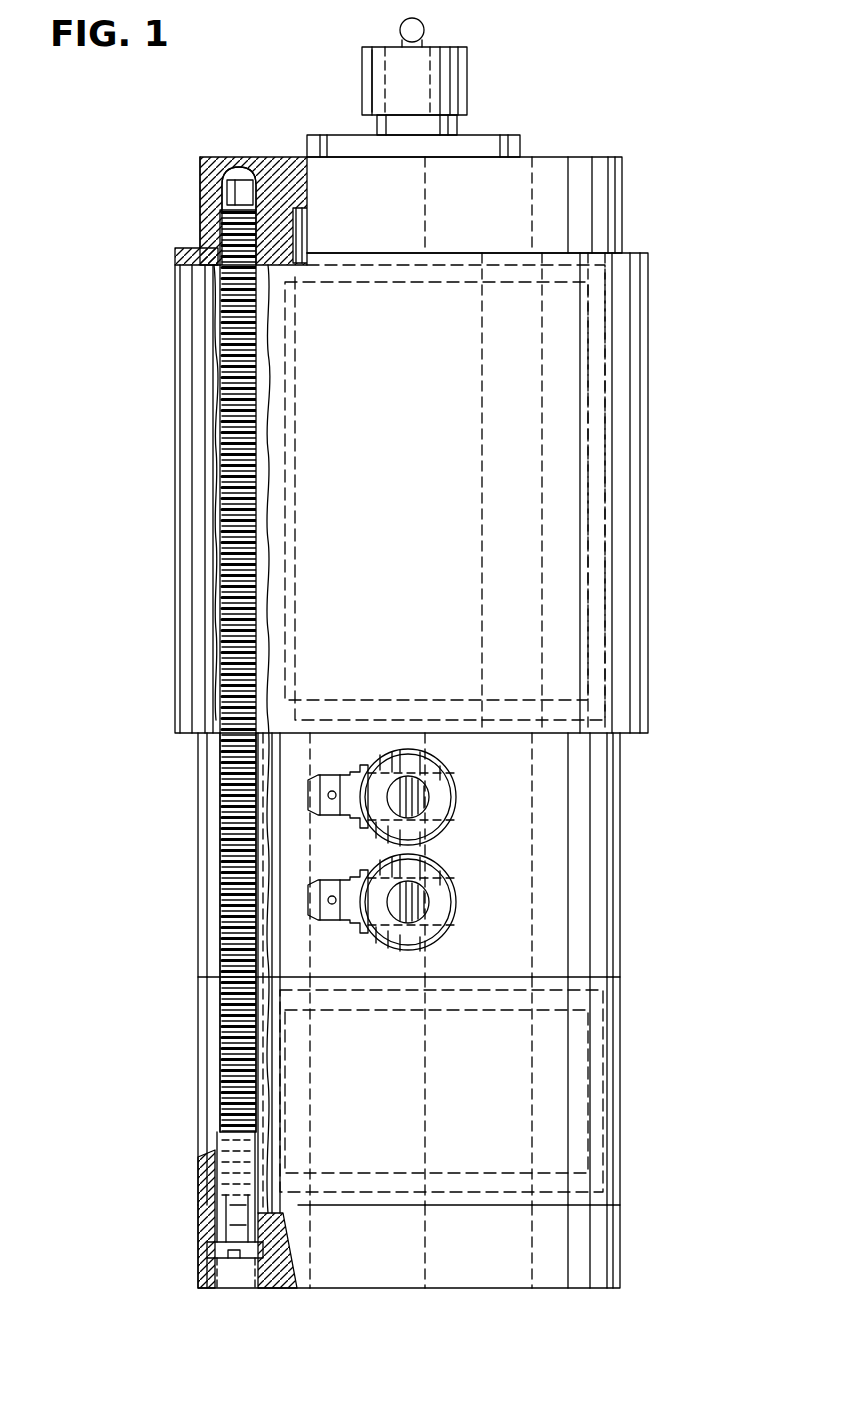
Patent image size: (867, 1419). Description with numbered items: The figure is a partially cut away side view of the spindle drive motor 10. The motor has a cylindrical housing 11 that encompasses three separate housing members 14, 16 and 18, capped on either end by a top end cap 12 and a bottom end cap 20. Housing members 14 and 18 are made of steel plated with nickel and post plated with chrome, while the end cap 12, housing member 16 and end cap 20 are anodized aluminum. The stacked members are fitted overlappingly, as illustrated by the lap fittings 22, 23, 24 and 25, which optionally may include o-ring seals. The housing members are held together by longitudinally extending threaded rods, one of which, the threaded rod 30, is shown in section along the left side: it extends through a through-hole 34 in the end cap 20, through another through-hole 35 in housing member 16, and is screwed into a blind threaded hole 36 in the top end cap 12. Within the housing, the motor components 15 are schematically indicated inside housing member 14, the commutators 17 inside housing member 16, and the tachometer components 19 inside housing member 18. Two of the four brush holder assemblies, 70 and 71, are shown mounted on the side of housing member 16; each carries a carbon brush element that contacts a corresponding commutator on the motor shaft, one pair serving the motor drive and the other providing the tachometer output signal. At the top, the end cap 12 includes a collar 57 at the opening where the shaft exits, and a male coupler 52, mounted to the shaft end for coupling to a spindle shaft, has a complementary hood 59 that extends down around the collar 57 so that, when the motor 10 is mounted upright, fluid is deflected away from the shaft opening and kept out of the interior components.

The spindle drive motor 10 is at (706, 328).
The cylindrical housing 11 is at (630, 181).
The top end cap 12 is at (604, 238).
The housing member 14 is at (632, 523).
The motor components 15 is at (571, 636).
The housing member 16 is at (612, 882).
The commutators 17 is at (430, 808).
The housing member 18 is at (612, 1130).
The tachometer components 19 is at (575, 1056).
The end cap 20 is at (610, 1255).
The lap fitting 22 is at (180, 257).
The lap fitting 23 is at (208, 736).
The lap fitting 24 is at (222, 975).
The lap fitting 25 is at (215, 1196).
The threaded rod 30 is at (236, 622).
The through-hole 34 is at (208, 1250).
The through-hole 35 is at (216, 900).
The blind threaded hole 36 is at (226, 196).
The male coupler 52 is at (468, 75).
The collar 57 is at (458, 126).
The hood 59 is at (373, 97).
The brush holder assembly 70 is at (425, 776).
The brush holder assembly 71 is at (430, 930).